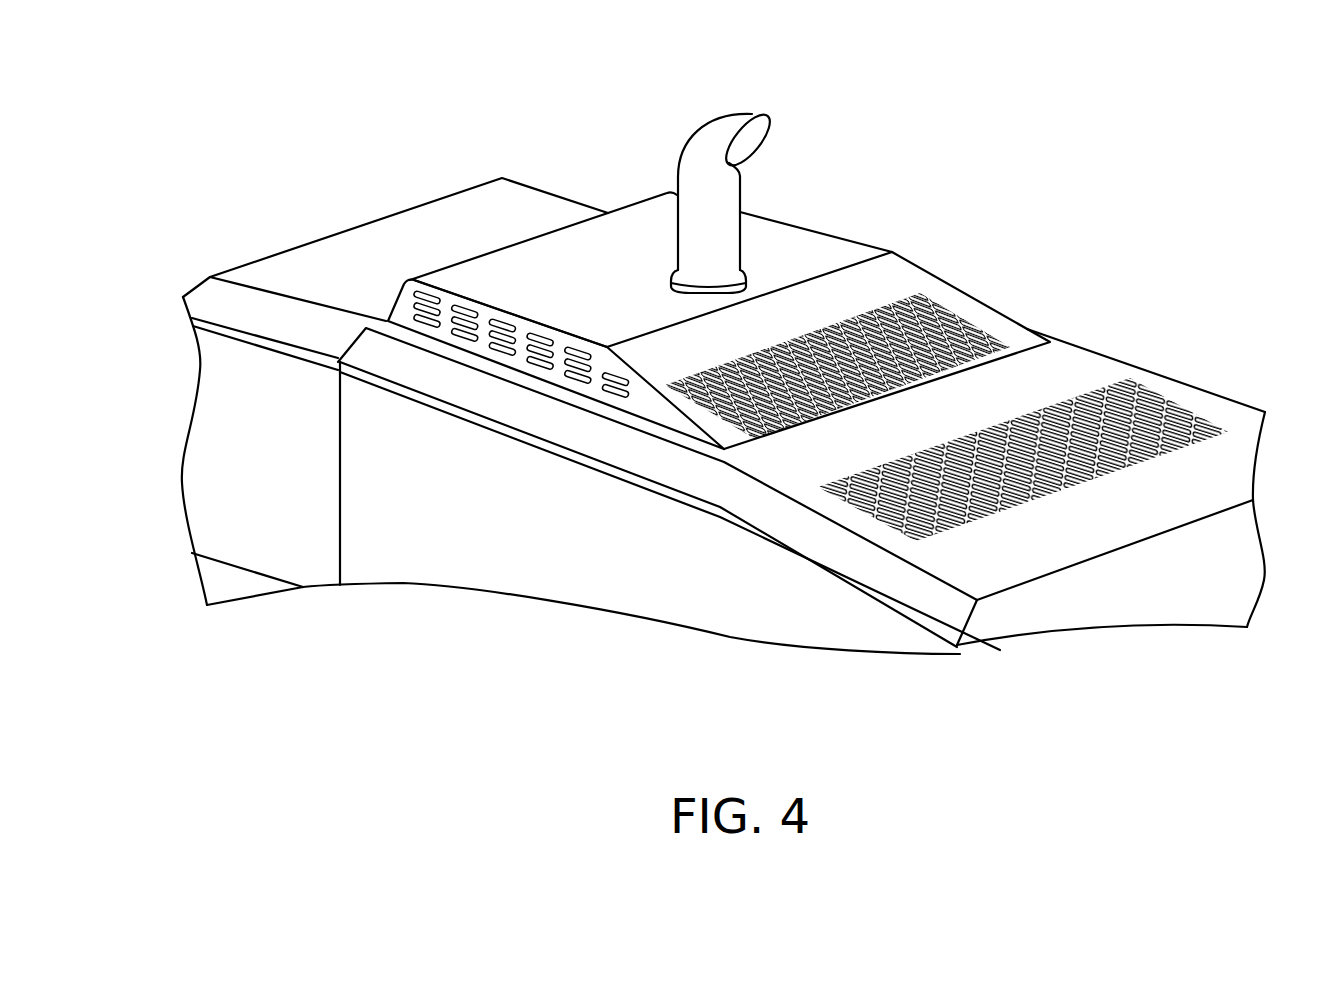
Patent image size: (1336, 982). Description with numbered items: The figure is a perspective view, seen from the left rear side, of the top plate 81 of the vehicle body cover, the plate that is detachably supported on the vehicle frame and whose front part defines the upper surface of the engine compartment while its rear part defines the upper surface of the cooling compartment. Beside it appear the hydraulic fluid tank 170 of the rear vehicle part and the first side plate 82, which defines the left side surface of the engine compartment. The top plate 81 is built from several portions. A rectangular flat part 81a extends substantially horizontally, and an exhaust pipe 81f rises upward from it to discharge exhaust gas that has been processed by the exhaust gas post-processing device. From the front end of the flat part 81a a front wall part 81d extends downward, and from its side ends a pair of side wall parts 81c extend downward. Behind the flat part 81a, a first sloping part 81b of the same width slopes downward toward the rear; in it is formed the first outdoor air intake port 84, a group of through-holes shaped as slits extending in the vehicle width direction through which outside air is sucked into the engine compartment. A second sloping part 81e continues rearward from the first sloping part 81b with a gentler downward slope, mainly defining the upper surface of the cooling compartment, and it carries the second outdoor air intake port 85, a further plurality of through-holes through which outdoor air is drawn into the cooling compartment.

The hydraulic fluid tank 170 is at (448, 217).
The top plate 81 is at (690, 333).
The flat part 81a is at (777, 238).
The first sloping part 81b is at (970, 305).
The side wall parts 81c is at (393, 325).
The front wall part 81d is at (407, 313).
The second sloping part 81e is at (1097, 363).
The exhaust pipe 81f is at (700, 137).
The first side plate 82 is at (545, 543).
The first outdoor air intake port 84 is at (884, 322).
The second outdoor air intake port 85 is at (1170, 397).